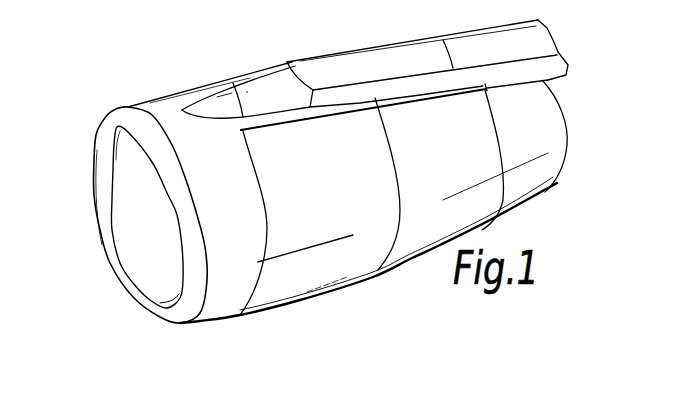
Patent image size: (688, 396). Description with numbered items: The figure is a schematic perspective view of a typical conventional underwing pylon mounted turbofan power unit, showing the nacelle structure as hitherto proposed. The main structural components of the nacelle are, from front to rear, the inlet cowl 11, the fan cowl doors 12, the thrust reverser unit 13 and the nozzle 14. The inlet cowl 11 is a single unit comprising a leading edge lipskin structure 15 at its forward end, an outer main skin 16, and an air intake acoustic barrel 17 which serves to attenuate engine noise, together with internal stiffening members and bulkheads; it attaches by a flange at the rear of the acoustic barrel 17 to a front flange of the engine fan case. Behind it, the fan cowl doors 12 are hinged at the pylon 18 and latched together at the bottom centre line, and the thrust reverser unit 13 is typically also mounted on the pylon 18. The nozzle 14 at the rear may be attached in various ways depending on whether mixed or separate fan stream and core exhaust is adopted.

The inlet cowl 11 is at (204, 326).
The fan cowl doors 12 is at (287, 280).
The thrust reverser unit 13 is at (405, 243).
The nozzle 14 is at (548, 132).
The leading edge lipskin structure 15 is at (107, 155).
The outer main skin 16 is at (163, 107).
The air intake acoustic barrel 17 is at (150, 233).
The pylon 18 is at (357, 67).